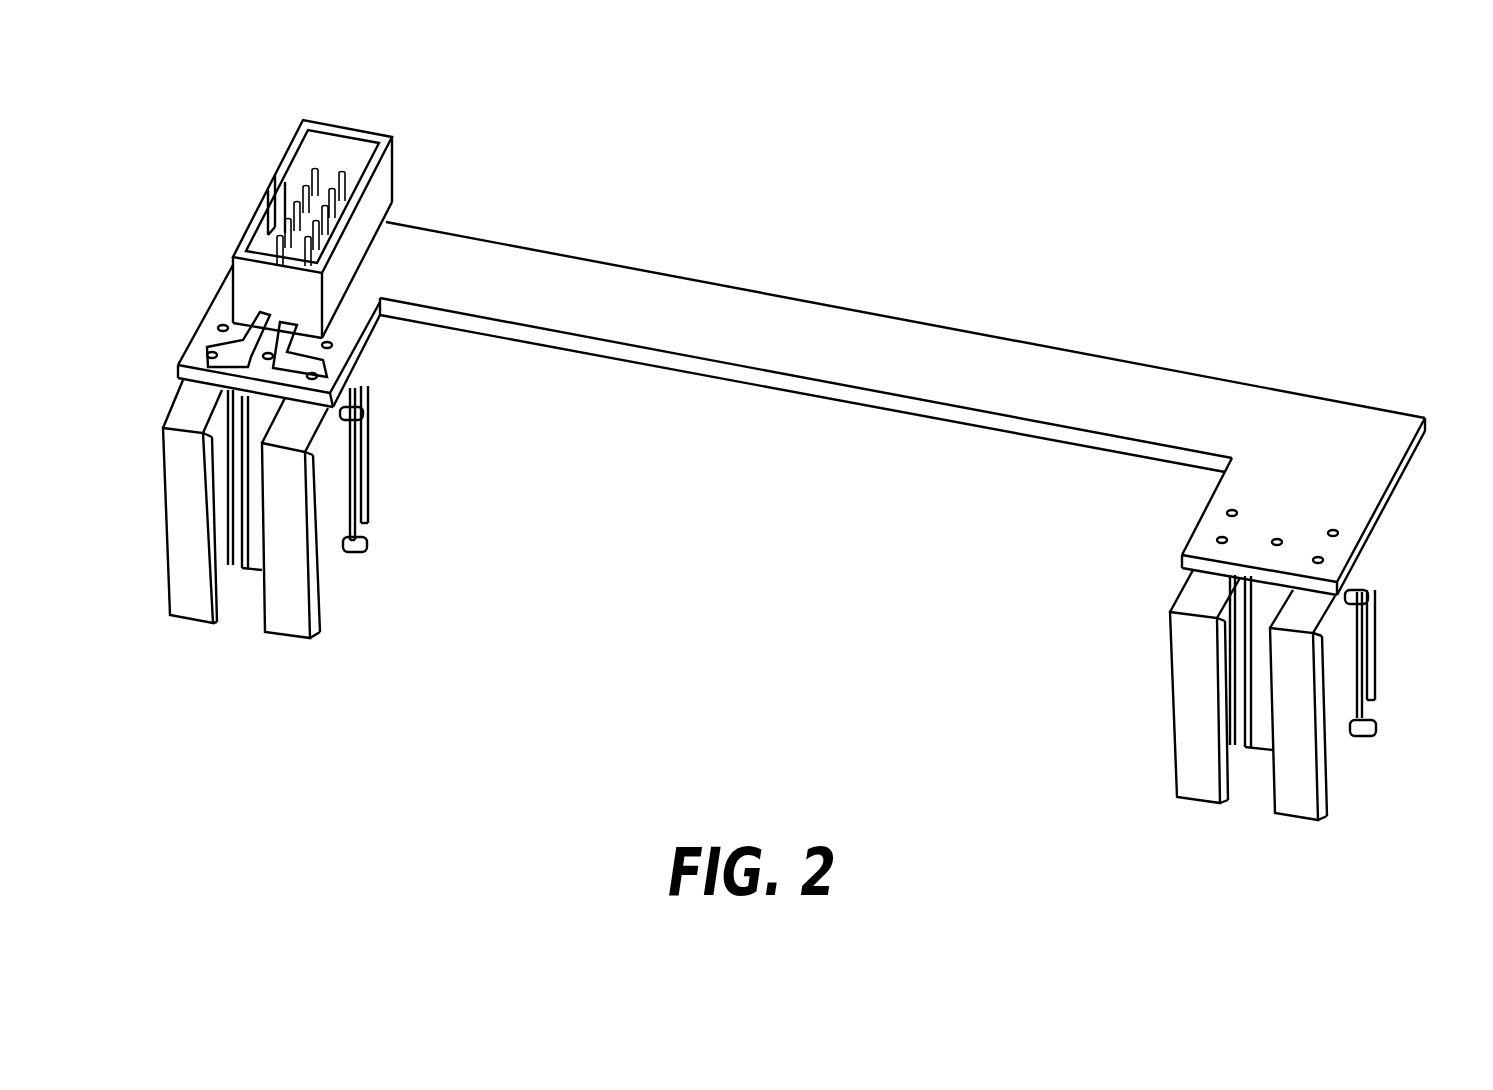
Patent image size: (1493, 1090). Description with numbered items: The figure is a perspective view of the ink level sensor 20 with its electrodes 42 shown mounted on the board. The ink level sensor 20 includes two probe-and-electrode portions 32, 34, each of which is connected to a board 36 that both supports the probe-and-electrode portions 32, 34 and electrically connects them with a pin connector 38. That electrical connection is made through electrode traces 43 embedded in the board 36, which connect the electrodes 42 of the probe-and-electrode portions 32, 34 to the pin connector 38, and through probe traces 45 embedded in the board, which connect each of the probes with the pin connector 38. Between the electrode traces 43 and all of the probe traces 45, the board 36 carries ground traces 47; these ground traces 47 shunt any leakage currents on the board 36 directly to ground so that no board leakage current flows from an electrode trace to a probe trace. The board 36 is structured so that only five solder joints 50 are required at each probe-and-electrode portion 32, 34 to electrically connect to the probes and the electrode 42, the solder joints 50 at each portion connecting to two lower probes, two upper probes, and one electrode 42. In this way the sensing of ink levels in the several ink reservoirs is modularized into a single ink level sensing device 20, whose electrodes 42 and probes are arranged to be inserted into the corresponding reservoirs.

The ink level sensor 20 is at (908, 124).
The probe-and-electrode portion 32 is at (368, 463).
The probe-and-electrode portion 34 is at (1376, 648).
The board 36 is at (793, 307).
The pin connector 38 is at (287, 147).
The electrodes 42 is at (166, 588).
The electrode traces 43 is at (268, 352).
The probe traces 45 is at (221, 326).
The ground traces 47 is at (205, 355).
The solder joints 50 is at (263, 355).